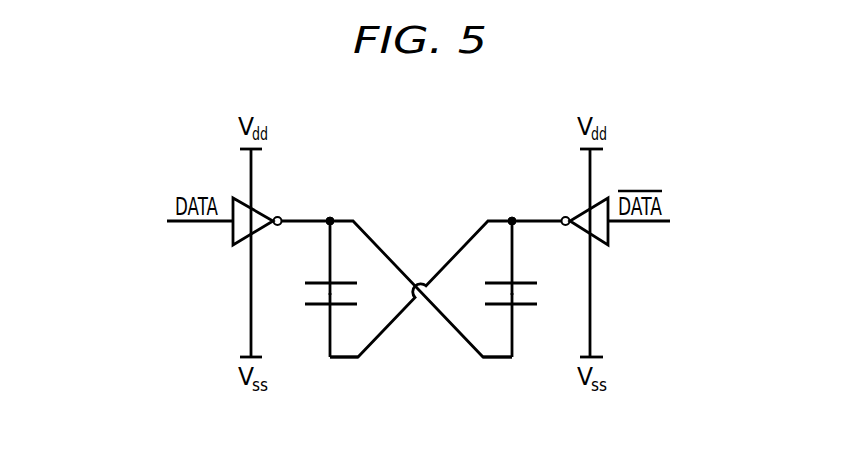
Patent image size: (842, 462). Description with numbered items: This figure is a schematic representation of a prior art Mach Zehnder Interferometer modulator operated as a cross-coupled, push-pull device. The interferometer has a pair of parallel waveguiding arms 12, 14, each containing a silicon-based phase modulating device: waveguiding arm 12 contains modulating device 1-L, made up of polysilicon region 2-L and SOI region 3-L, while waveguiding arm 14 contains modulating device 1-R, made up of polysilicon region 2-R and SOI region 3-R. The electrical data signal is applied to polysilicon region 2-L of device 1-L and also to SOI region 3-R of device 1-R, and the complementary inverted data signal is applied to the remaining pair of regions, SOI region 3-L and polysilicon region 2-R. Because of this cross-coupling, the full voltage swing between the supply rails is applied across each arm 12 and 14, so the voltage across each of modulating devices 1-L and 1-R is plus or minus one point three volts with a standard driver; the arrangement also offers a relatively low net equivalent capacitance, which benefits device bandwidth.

The modulating device 1-L is at (356, 203).
The modulating device 1-R is at (486, 203).
The polysilicon region 2-L is at (340, 258).
The polysilicon region 2-R is at (522, 258).
The SOI region 3-L is at (340, 325).
The SOI region 3-R is at (522, 325).
The waveguiding arm 12 is at (338, 372).
The waveguiding arm 14 is at (497, 372).